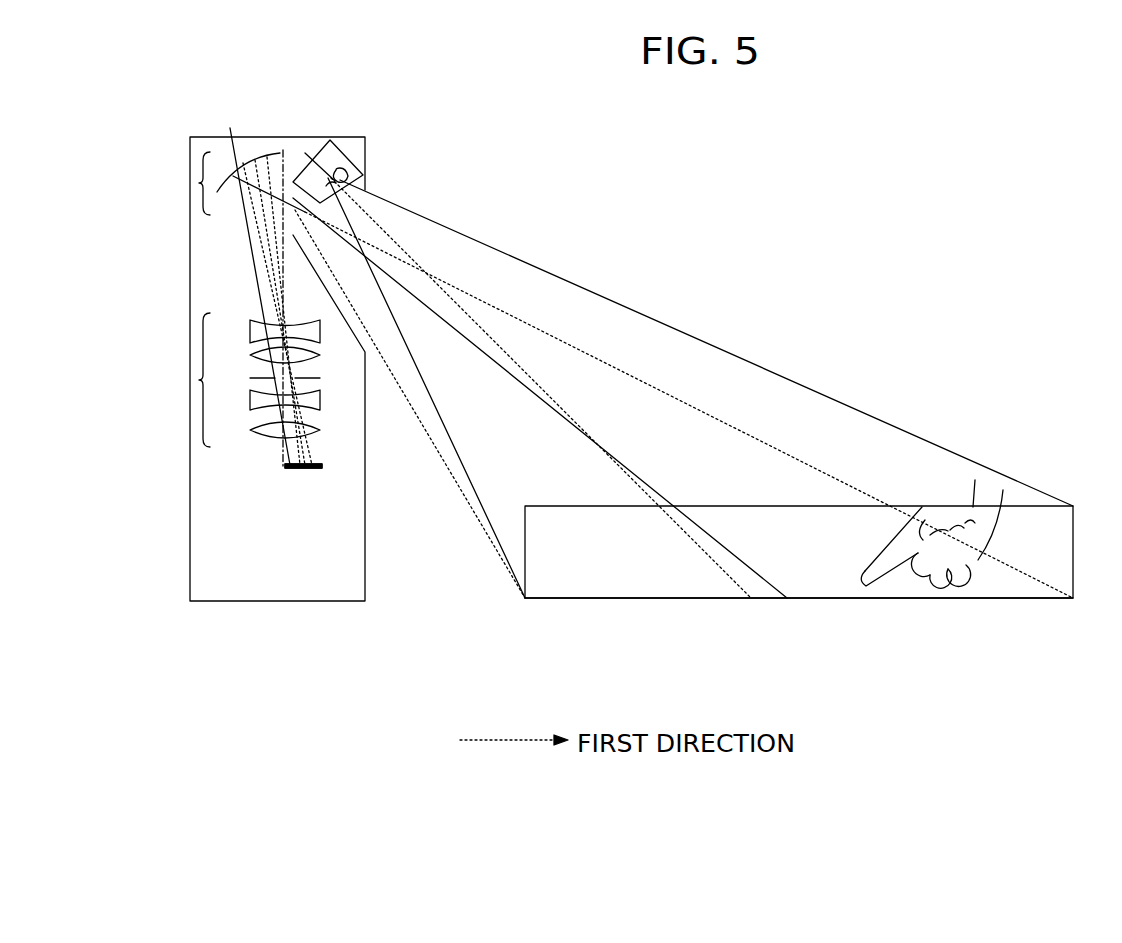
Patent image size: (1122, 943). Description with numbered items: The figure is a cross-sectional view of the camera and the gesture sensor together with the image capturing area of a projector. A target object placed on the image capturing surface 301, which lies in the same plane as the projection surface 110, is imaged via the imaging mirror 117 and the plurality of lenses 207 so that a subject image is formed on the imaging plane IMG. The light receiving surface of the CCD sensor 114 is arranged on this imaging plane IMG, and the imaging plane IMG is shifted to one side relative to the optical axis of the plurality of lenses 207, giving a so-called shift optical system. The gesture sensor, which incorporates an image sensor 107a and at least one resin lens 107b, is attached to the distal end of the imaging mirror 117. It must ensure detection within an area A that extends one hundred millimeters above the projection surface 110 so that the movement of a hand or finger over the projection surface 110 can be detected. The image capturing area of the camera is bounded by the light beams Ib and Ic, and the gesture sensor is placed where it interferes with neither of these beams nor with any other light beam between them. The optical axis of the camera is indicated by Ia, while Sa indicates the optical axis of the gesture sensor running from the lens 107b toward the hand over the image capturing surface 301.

The image sensor 107a is at (324, 165).
The lens 107b is at (350, 178).
The imaging mirror 117 is at (212, 183).
The plurality of lenses 207 is at (232, 380).
The CCD sensor 114 is at (290, 469).
The imaging plane IMG is at (318, 469).
The optical axis of the gesture sensor Sa is at (504, 349).
The optical axis of the camera Ia is at (532, 392).
The light beam Ib is at (457, 480).
The light beam Ic is at (683, 403).
The area A is at (606, 599).
The image capturing surface 301 is at (767, 598).
The projection surface 110 is at (799, 583).